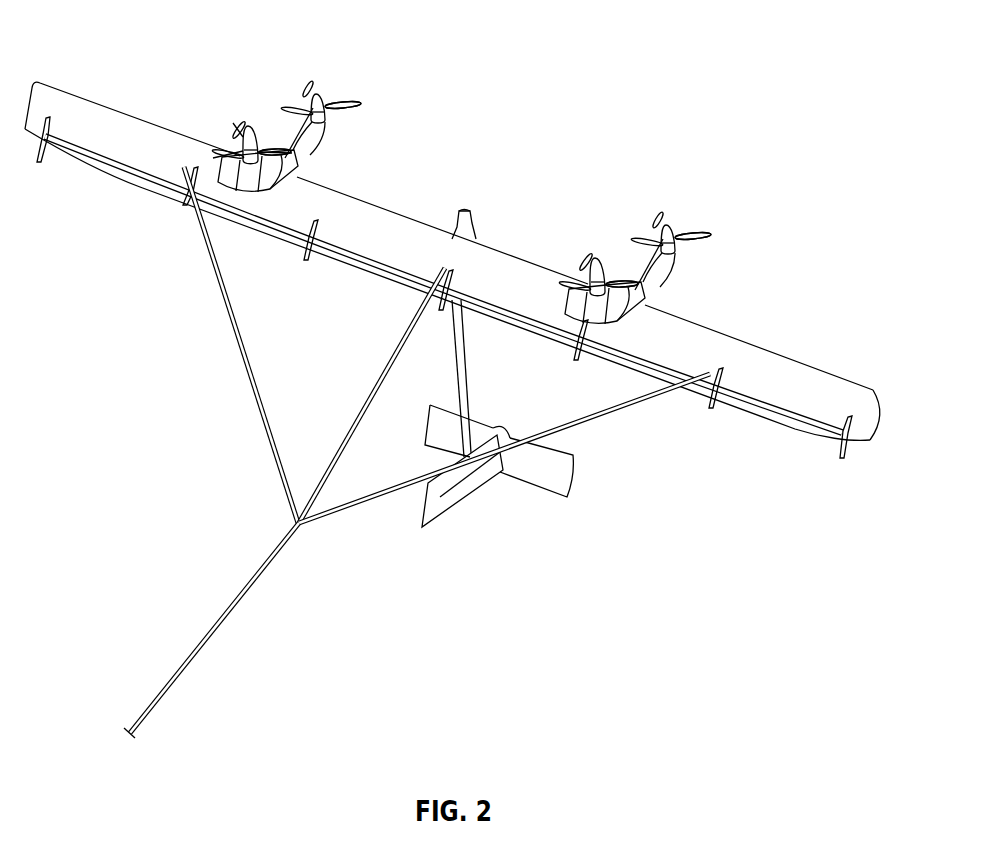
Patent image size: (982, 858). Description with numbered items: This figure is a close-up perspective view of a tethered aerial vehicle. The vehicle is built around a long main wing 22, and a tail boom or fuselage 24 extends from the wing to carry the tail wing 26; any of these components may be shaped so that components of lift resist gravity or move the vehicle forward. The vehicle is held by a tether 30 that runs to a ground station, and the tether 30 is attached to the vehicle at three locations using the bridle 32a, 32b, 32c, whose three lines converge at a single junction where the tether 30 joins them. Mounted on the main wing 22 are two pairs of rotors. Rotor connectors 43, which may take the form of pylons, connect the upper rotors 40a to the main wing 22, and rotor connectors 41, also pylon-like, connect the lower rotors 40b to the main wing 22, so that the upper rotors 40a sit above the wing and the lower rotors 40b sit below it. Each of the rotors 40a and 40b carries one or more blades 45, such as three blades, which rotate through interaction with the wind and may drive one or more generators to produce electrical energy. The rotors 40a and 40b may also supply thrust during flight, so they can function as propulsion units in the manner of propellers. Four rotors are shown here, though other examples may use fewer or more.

The main wing 22 is at (787, 380).
The tail boom or fuselage 24 is at (462, 370).
The tail wing 26 is at (478, 485).
The tether 30 is at (235, 608).
The bridle 32a is at (238, 350).
The bridle 32b is at (385, 368).
The bridle 32c is at (383, 495).
The upper rotor 40a is at (247, 130).
The lower rotor 40b is at (313, 94).
The rotor connector 41 is at (322, 136).
The rotor connector 43 is at (236, 184).
The rotor blade 45 is at (354, 103).